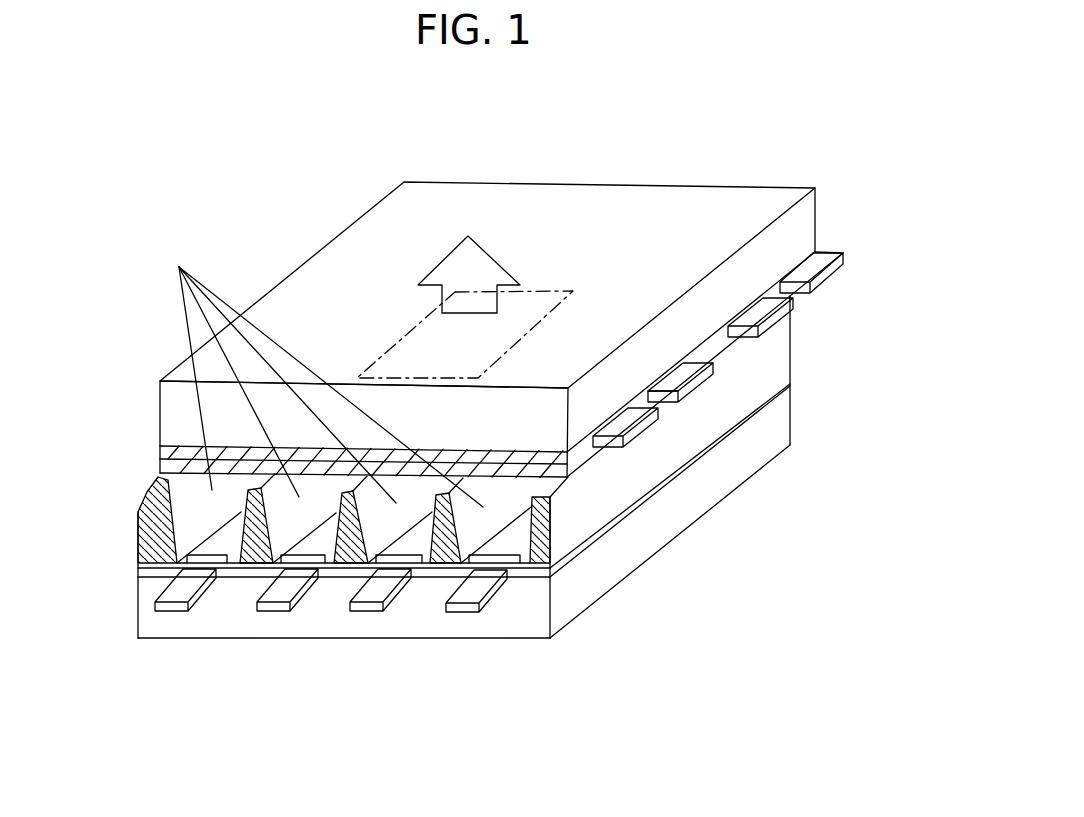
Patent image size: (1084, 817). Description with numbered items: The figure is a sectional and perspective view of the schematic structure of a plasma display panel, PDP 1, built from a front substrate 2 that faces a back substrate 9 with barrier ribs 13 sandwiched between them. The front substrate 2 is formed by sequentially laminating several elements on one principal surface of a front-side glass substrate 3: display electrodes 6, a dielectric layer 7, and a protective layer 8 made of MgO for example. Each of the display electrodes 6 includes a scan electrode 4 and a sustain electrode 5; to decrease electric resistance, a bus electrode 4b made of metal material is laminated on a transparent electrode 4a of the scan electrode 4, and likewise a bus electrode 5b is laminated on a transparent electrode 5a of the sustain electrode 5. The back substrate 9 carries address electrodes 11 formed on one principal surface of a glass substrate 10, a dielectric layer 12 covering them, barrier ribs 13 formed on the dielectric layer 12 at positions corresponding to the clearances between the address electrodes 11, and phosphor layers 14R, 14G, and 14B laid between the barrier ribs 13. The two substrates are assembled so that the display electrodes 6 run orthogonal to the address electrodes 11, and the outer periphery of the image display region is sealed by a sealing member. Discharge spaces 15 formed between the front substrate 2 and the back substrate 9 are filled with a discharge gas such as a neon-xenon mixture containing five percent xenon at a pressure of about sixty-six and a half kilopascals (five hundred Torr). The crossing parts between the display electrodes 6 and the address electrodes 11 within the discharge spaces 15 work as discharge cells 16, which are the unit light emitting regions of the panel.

The PDP 1 is at (335, 213).
The front substrate 2 is at (710, 248).
The front-side glass substrate 3 is at (160, 402).
The scan electrode 4 is at (860, 512).
The transparent electrode 4a is at (638, 432).
The bus electrode 4b is at (628, 426).
The sustain electrode 5 is at (933, 440).
The transparent electrode 5a is at (673, 382).
The bus electrode 5b is at (703, 383).
The display electrodes 6 is at (954, 493).
The dielectric layer 7 is at (173, 447).
The protective layer 8 is at (162, 465).
The back substrate 9 is at (525, 642).
The glass substrate 10 is at (532, 603).
The address electrodes 11 is at (170, 605).
The dielectric layer 12 is at (145, 570).
The barrier ribs 13 is at (244, 508).
The phosphor layer 14R is at (203, 555).
The phosphor layer 14G is at (268, 604).
The phosphor layer 14B is at (395, 560).
The discharge spaces 15 is at (320, 371).
The discharge cells 16 is at (390, 348).